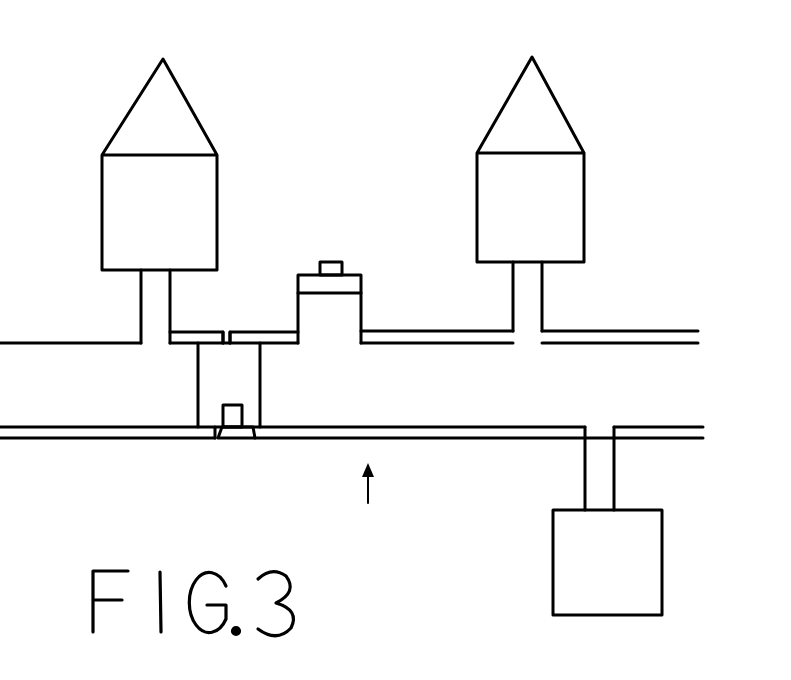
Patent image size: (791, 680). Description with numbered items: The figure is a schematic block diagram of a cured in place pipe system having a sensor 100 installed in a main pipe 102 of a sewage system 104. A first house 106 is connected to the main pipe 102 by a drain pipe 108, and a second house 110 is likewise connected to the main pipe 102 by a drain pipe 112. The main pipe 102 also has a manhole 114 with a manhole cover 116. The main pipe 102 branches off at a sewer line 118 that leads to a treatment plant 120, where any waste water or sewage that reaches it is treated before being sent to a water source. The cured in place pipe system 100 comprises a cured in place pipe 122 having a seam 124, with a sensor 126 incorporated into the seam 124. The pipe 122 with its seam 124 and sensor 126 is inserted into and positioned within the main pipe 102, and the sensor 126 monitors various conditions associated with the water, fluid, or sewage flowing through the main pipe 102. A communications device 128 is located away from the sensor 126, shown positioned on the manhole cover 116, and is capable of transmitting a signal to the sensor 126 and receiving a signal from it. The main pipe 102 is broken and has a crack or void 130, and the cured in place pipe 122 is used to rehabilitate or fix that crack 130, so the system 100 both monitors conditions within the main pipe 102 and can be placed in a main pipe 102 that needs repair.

The cured in place pipe system having a sensor 100 is at (253, 288).
The main pipe 102 is at (420, 408).
The sewage system 104 is at (371, 505).
The first house 106 is at (148, 115).
The drain pipe 108 is at (150, 305).
The second house 110 is at (540, 108).
The drain pipe 112 is at (528, 293).
The manhole 114 is at (348, 317).
The manhole cover 116 is at (348, 282).
The sewer line 118 is at (602, 482).
The treatment plant 120 is at (643, 562).
The cured in place pipe 122 is at (248, 378).
The seam 124 is at (252, 428).
The sensor 126 is at (233, 415).
The communications device 128 is at (330, 262).
The crack or void 130 is at (227, 337).